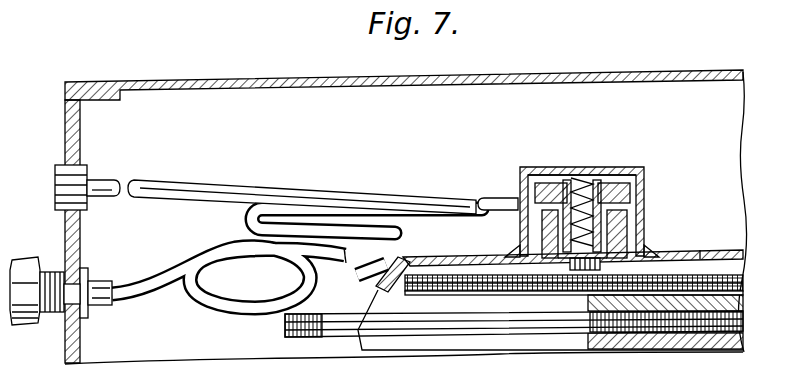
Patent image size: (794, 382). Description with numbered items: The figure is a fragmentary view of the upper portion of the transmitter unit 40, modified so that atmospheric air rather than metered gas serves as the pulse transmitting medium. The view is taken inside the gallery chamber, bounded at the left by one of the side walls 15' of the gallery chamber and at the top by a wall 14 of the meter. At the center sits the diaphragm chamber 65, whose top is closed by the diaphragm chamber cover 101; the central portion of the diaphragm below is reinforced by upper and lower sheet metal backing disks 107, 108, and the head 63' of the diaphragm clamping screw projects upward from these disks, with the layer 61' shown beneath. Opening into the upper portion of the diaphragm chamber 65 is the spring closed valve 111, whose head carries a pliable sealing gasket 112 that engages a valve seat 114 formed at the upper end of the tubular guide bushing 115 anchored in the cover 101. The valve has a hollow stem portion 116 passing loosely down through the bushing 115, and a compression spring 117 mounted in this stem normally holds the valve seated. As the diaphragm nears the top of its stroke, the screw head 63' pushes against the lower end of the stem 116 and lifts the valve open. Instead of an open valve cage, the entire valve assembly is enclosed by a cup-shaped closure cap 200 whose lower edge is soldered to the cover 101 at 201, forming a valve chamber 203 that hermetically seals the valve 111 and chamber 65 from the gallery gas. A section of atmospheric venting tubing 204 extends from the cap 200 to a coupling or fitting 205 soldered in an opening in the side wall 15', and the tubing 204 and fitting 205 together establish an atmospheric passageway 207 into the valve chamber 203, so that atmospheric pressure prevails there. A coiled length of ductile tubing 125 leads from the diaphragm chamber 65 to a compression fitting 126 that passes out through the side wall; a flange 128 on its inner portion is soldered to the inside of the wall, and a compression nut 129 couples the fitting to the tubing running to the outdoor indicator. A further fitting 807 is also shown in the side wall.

The top wall 14 is at (68, 86).
The side wall of the gallery chamber 15' is at (382, 218).
The fitting 807 is at (55, 186).
The coupling or fitting 205 is at (88, 175).
The section of atmospheric venting tubing 204 is at (384, 196).
The coiled length of ductile tubing 125 is at (178, 260).
The compression nut 129 is at (24, 257).
The flange 128 is at (90, 318).
The compression fitting 126 is at (52, 318).
The diaphragm chamber 65 is at (446, 272).
The soldered joint 201 is at (497, 256).
The layer 61' is at (574, 292).
The head of the diaphragm clamping screw 63' is at (574, 301).
The lower sheet metal backing disk 108 is at (743, 296).
The upper sheet metal backing disk 107 is at (743, 278).
The diaphragm chamber cover 101 is at (712, 254).
The transmitter unit 40 is at (280, 327).
The cup-shaped closure cap 200 is at (527, 168).
The valve chamber 203 is at (630, 168).
The spring closed valve 111 is at (554, 184).
The compression spring 117 is at (592, 180).
The pliable sealing gasket 112 is at (640, 194).
The valve seat 114 is at (636, 208).
The tubular guide bushing 115 is at (633, 222).
The hollow stem portion 116 is at (625, 252).
The atmospheric passageway 207 is at (516, 196).